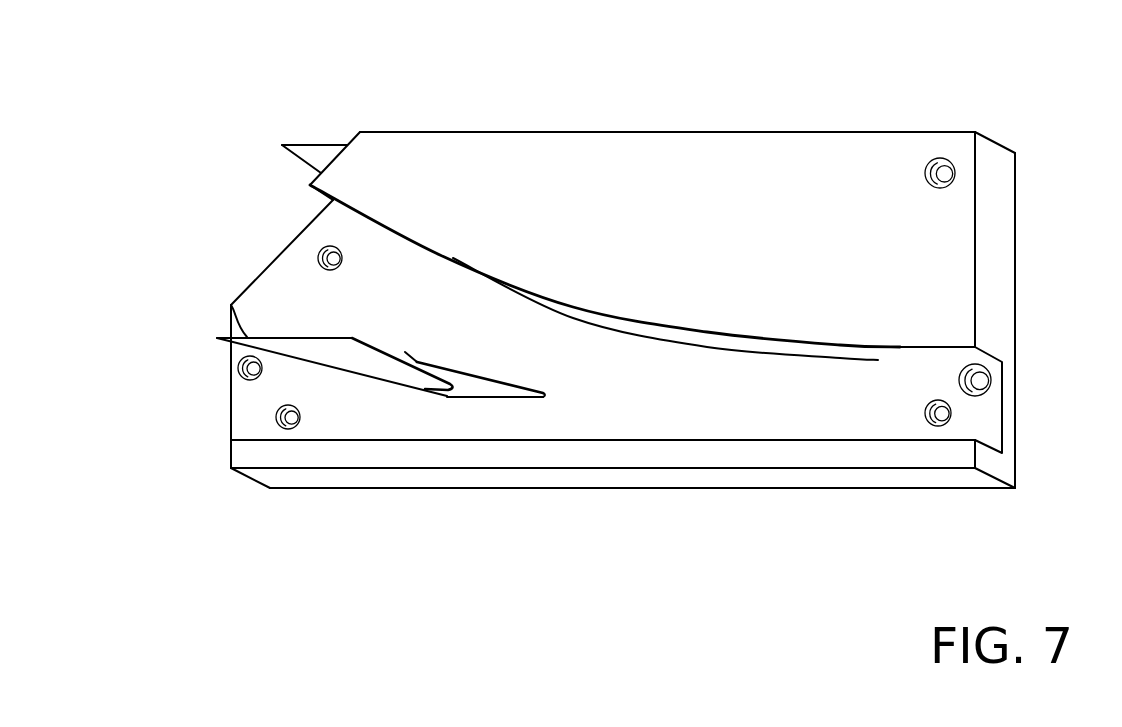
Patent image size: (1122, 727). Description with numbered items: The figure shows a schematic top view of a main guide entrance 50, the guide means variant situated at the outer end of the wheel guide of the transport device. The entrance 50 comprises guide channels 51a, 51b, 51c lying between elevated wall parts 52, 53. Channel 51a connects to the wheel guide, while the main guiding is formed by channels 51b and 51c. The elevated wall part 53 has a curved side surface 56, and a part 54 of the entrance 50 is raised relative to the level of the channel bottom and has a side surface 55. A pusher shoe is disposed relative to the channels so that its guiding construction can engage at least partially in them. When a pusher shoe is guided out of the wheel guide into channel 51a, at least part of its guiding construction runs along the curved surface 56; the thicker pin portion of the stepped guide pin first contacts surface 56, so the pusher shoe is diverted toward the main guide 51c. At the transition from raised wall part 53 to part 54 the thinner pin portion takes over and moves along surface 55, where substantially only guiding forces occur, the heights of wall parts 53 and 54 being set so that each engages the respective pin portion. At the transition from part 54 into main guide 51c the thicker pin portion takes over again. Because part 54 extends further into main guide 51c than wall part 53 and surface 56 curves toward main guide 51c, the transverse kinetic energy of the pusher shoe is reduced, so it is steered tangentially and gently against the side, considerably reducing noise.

The main guide entrance 50 is at (835, 72).
The guide channel 51a is at (347, 233).
The guide channel 51b is at (313, 393).
The main guide channel 51c is at (690, 410).
The elevated wall part 52 is at (502, 150).
The elevated wall part 53 is at (233, 306).
The raised part 54 is at (481, 390).
The side surface 55 is at (500, 380).
The curved side surface 56 is at (417, 360).